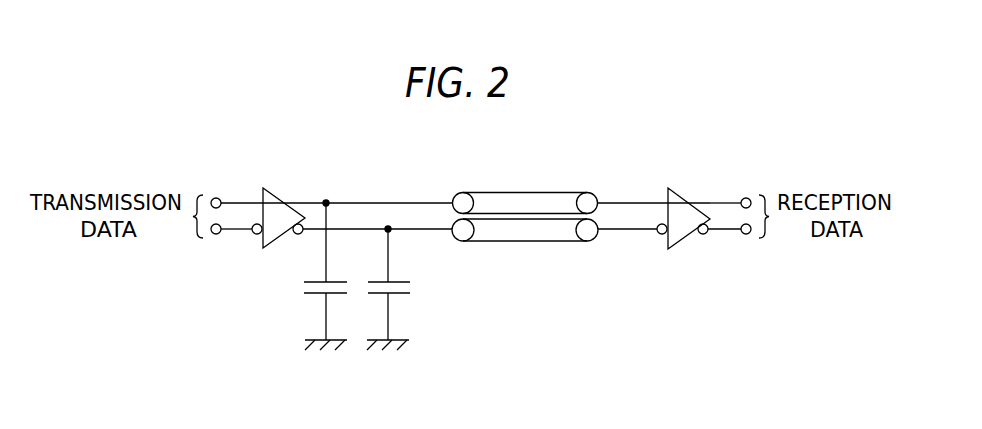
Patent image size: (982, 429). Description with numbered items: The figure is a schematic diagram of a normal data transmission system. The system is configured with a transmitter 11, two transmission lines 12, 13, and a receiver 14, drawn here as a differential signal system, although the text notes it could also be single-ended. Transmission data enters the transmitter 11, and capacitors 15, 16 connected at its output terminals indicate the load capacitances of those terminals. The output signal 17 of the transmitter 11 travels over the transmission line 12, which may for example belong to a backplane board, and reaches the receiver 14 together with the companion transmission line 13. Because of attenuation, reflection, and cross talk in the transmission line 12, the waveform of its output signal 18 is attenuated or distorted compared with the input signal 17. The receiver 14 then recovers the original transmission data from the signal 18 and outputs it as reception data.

The transmitter 11 is at (278, 190).
The transmission line 12 is at (507, 190).
The transmission line 13 is at (522, 243).
The receiver 14 is at (688, 190).
The capacitor 15 is at (312, 296).
The capacitor 16 is at (400, 296).
The output signal 17 is at (395, 200).
The output signal 18 is at (626, 200).